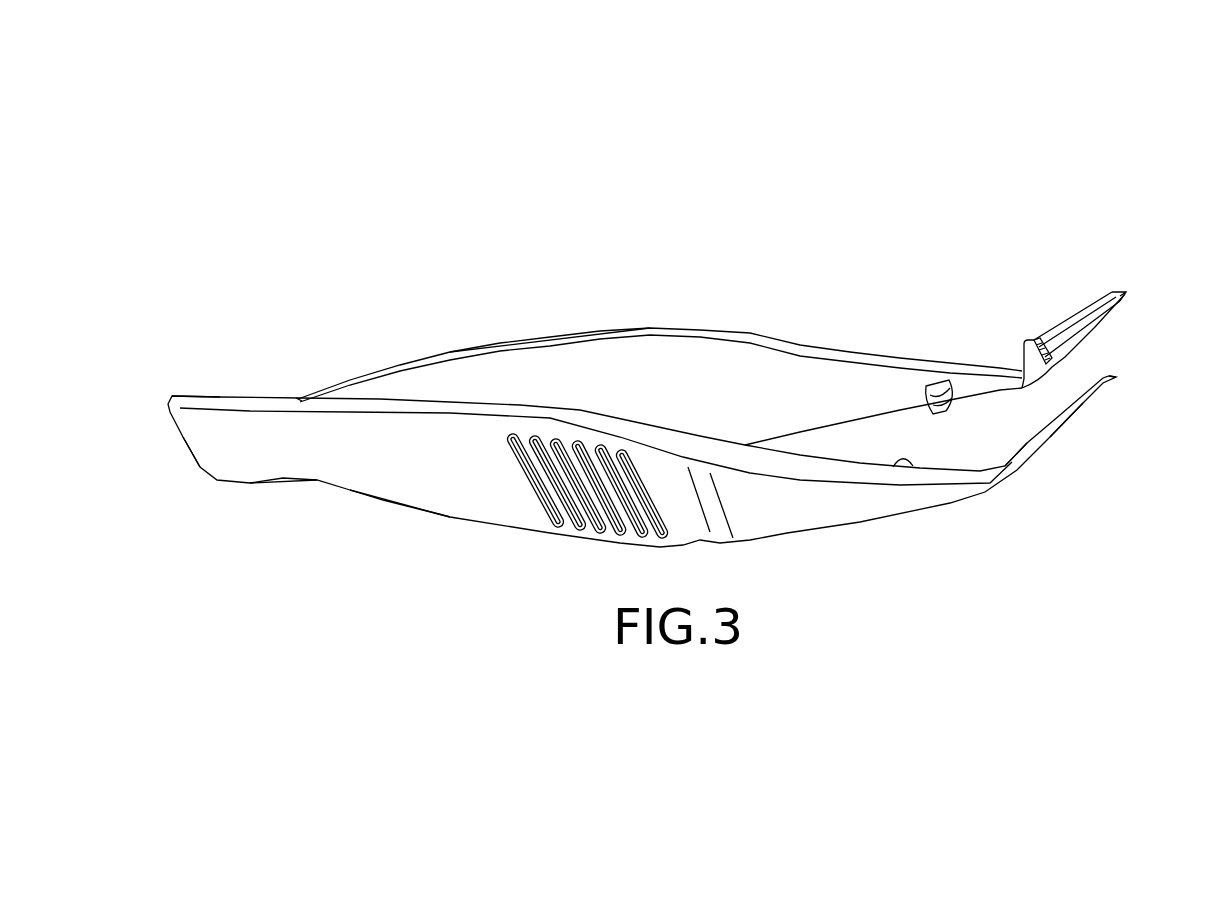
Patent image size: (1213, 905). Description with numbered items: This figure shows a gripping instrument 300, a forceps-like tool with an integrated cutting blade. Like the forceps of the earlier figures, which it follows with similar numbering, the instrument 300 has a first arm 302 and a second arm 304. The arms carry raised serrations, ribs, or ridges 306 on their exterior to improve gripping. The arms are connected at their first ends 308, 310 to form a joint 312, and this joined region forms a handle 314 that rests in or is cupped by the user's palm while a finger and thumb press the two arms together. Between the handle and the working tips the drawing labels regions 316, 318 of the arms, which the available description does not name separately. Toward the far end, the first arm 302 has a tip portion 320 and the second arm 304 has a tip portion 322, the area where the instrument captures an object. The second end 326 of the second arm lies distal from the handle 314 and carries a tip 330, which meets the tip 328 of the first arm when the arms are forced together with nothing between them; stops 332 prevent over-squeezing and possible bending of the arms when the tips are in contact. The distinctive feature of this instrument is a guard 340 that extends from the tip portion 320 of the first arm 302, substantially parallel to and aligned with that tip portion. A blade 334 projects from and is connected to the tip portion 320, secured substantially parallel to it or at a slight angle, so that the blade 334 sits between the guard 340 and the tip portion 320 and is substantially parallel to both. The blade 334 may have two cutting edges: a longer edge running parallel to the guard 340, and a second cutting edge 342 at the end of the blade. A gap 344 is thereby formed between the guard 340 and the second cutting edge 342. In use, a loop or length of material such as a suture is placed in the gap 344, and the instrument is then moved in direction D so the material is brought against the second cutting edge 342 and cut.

The gripping instrument 300 is at (668, 346).
The first arm 302 is at (693, 352).
The second arm 304 is at (758, 523).
The raised serrations, ribs, or ridges 306 is at (557, 525).
The first end of first arm 308 is at (188, 367).
The first end of second arm 310 is at (285, 523).
The joint 312 is at (300, 398).
The handle 314 is at (205, 443).
The blade top surface 316 is at (537, 360).
The lower housing 318 is at (415, 497).
The tip portion of first arm 320 is at (1047, 368).
The tip portion of second arm 322 is at (1018, 468).
The second end of second arm 326 is at (1063, 448).
The tip of first arm 328 is at (1128, 290).
The tip of second arm 330 is at (1111, 377).
The stops 332 is at (935, 384).
The blade 334 is at (1093, 328).
The guard 340 is at (1086, 304).
The second cutting edge 342 is at (1030, 340).
The gap 344 is at (1050, 329).
The direction D is at (1076, 442).